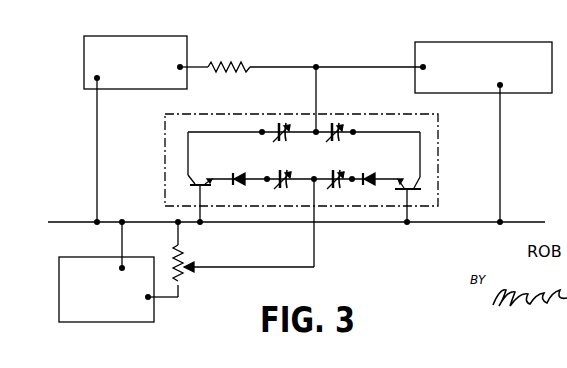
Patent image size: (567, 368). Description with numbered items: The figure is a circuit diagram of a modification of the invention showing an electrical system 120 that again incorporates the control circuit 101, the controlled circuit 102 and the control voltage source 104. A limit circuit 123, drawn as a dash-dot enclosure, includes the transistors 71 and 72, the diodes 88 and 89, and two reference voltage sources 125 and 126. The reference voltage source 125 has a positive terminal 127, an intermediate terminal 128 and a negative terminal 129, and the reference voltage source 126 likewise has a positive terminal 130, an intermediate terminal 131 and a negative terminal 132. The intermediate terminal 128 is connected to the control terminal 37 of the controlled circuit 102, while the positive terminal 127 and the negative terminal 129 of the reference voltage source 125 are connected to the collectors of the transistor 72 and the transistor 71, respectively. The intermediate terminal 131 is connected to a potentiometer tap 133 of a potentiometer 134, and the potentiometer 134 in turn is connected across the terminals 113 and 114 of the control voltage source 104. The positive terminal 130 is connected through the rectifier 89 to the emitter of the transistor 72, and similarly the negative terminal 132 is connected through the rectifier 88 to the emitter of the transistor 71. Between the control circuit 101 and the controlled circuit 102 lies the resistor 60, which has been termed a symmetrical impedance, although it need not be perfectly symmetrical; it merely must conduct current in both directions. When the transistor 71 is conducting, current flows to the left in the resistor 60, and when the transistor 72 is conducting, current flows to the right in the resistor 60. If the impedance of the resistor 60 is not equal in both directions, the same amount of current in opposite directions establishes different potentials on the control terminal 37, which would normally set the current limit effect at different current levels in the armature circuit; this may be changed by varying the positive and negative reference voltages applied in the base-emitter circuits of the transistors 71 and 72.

The control circuit 101 is at (189, 48).
The resistor 60 is at (232, 62).
The electrical system 120 is at (318, 46).
The control terminal 37 is at (422, 66).
The controlled circuit 102 is at (441, 91).
The limit circuit 123 is at (262, 113).
The reference voltage source 125 is at (284, 124).
The intermediate terminal 128 is at (316, 128).
The negative terminal 129 is at (260, 133).
The positive terminal 127 is at (355, 135).
The transistor 71 is at (193, 187).
The transistor 72 is at (416, 191).
The diode 88 is at (257, 169).
The diode 89 is at (376, 177).
The reference voltage source 126 is at (339, 166).
The intermediate terminal 131 is at (304, 221).
The negative terminal 132 is at (268, 184).
The positive terminal 130 is at (352, 184).
The control voltage source 104 is at (65, 260).
The terminal 114 is at (123, 266).
The terminal 113 is at (151, 298).
The potentiometer 134 is at (181, 250).
The potentiometer tap 133 is at (195, 266).